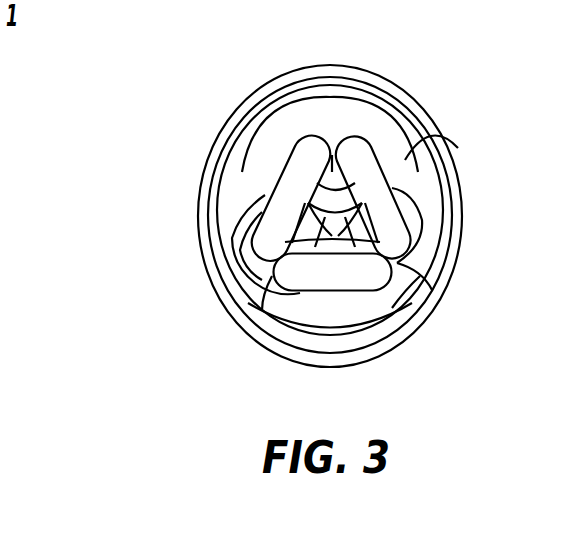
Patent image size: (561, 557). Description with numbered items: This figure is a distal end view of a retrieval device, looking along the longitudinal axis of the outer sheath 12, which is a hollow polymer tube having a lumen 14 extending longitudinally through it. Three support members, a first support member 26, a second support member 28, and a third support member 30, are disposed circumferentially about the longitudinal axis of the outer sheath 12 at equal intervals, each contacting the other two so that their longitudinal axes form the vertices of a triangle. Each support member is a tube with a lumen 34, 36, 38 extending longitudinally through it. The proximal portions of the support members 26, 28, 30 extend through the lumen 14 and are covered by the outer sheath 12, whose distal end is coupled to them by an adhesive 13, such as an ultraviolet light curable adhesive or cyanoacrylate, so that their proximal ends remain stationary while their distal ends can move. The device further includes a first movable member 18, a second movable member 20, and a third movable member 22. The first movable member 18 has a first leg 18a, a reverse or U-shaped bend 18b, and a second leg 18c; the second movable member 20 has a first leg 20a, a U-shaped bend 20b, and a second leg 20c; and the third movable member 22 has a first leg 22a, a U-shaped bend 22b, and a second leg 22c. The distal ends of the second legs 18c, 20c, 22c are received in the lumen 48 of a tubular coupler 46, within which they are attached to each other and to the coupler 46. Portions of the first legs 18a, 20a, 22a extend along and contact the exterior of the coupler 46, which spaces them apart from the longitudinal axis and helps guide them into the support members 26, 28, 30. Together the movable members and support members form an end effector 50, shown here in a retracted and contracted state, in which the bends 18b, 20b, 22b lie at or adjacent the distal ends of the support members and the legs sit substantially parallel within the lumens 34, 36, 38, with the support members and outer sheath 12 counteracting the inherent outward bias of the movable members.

The outer sheath 12 is at (389, 82).
The adhesive 13 is at (237, 148).
The lumen 14 is at (452, 143).
The first movable member 18 is at (266, 193).
The first leg 18a is at (298, 143).
The U-shaped bend 18b is at (266, 186).
The second leg 18c is at (258, 237).
The second movable member 20 is at (381, 297).
The first leg 20a is at (266, 285).
The U-shaped bend 20b is at (337, 292).
The second leg 20c is at (402, 295).
The third movable member 22 is at (347, 127).
The first leg 22a is at (410, 264).
The U-shaped bend 22b is at (435, 195).
The second leg 22c is at (334, 203).
The first support member 26 is at (400, 104).
The second support member 28 is at (282, 277).
The third support member 30 is at (452, 238).
The lumen 34 is at (313, 122).
The lumen 36 is at (258, 268).
The lumen 38 is at (403, 265).
The coupler 46 is at (413, 178).
The lumen 48 is at (303, 288).
The end effector 50 is at (250, 175).